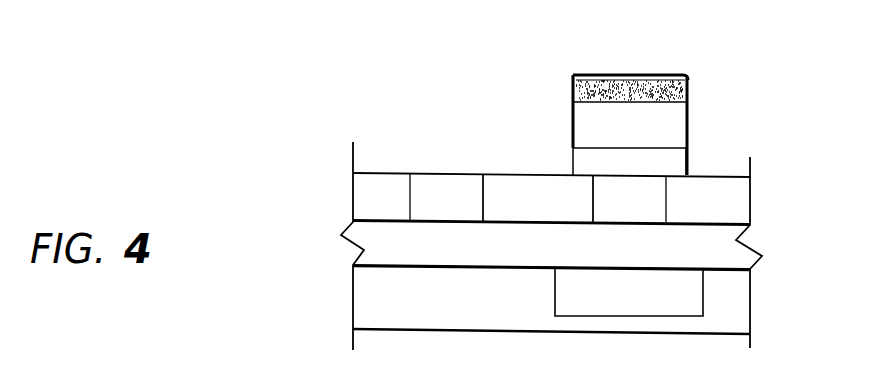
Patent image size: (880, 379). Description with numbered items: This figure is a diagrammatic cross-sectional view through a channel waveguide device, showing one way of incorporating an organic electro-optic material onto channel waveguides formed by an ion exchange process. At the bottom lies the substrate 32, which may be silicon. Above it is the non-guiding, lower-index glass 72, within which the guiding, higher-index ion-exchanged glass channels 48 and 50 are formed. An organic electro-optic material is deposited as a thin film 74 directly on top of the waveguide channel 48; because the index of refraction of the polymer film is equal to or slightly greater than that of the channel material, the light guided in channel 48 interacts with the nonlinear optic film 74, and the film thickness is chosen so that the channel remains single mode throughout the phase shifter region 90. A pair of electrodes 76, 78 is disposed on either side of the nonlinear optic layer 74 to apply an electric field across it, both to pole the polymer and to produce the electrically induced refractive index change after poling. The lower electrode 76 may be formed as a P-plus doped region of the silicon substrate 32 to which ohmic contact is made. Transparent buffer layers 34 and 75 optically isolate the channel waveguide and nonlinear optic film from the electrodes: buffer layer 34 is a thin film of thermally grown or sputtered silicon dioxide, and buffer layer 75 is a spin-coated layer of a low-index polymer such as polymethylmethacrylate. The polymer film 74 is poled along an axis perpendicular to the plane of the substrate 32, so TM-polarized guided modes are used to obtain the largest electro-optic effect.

The substrate 32 is at (551, 300).
The buffer layer 34 is at (551, 245).
The channel waveguide 48 is at (629, 199).
The ion-exchanged glass channel 50 is at (446, 197).
The non-guiding glass 72 is at (538, 198).
The thin film of organic electro-optic material 74 is at (675, 166).
The buffer layer 75 is at (688, 112).
The lower electrode 76 is at (629, 292).
The upper electrode 78 is at (574, 88).
The phase shifter region 90 is at (646, 75).